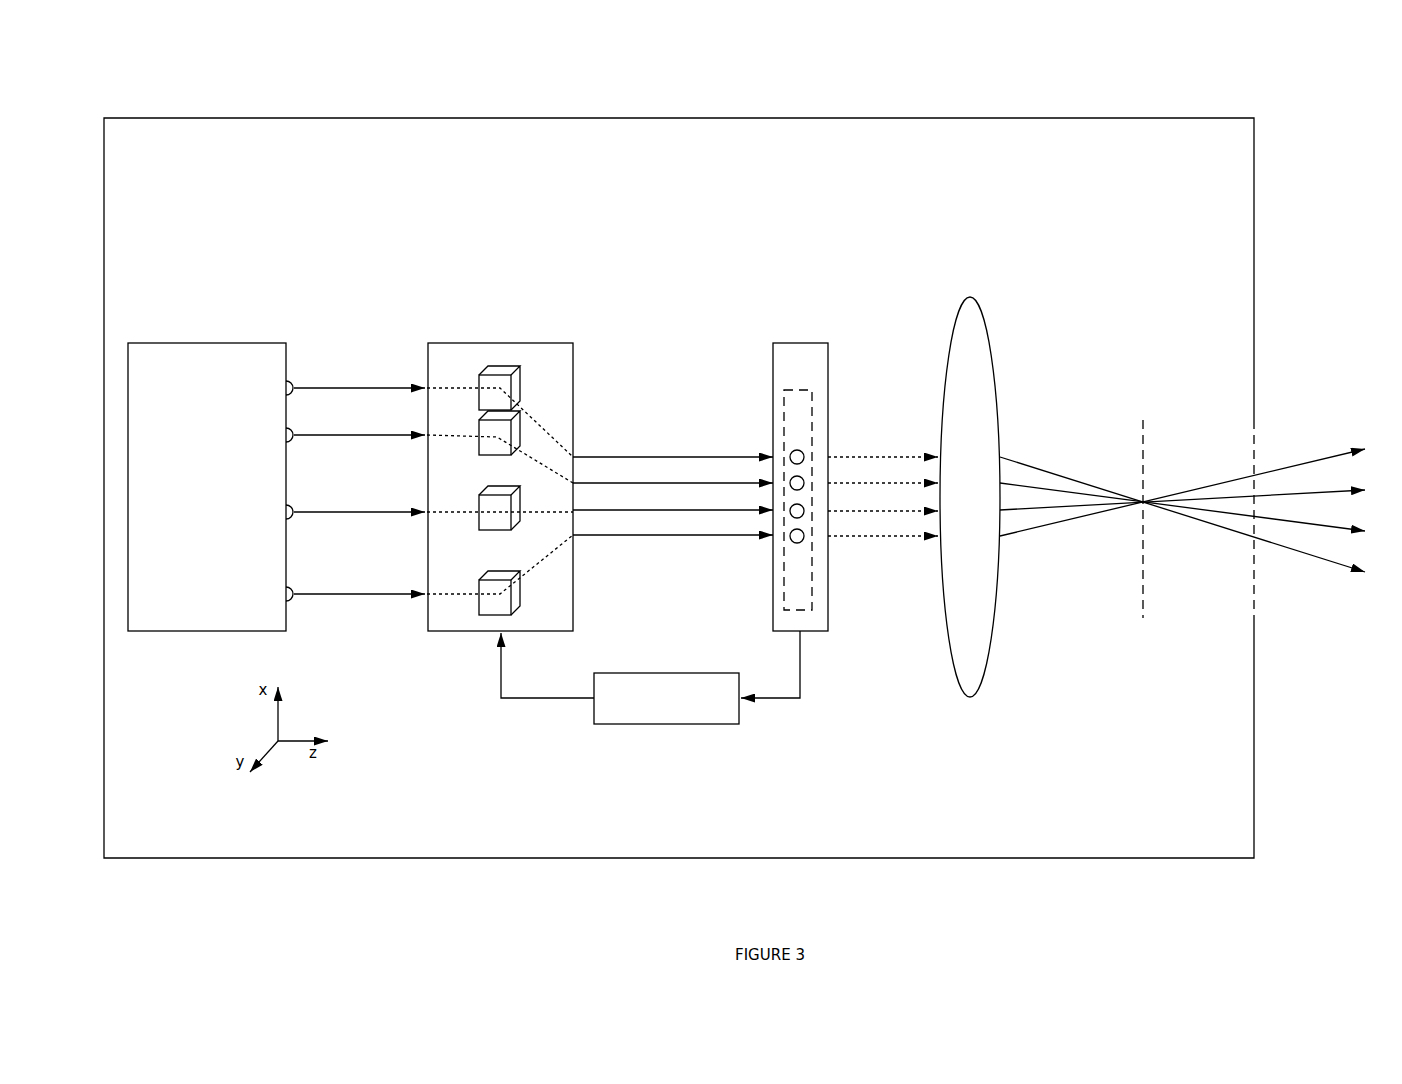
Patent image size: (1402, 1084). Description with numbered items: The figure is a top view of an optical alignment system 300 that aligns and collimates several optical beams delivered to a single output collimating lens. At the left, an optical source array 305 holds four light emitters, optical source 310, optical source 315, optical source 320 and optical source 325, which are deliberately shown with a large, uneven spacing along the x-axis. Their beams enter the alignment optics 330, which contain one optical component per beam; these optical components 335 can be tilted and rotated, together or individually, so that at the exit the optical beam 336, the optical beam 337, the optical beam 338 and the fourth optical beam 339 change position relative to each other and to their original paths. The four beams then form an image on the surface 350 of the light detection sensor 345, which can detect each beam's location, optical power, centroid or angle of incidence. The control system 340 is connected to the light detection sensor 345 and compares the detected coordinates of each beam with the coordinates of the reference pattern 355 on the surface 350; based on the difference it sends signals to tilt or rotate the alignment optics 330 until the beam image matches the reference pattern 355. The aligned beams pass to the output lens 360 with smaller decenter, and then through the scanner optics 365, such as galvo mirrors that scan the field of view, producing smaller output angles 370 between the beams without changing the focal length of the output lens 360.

The optical alignment system 300 is at (1122, 96).
The optical source array 305 is at (207, 487).
The optical source 310 is at (294, 384).
The optical source 315 is at (294, 431).
The optical source 320 is at (294, 516).
The optical source 325 is at (294, 598).
The alignment optics 330 is at (500, 463).
The optical components 335 is at (476, 368).
The optical beam 336 is at (607, 456).
The optical beam 337 is at (708, 456).
The optical beam 338 is at (607, 536).
The fourth optical beam 339 is at (708, 537).
The control system 340 is at (650, 677).
The light detection sensor 345 is at (836, 466).
The surface 350 is at (811, 606).
The reference pattern 355 is at (780, 547).
The output lens 360 is at (972, 468).
The scanner optics 365 is at (1140, 546).
The output angles 370 is at (1052, 526).